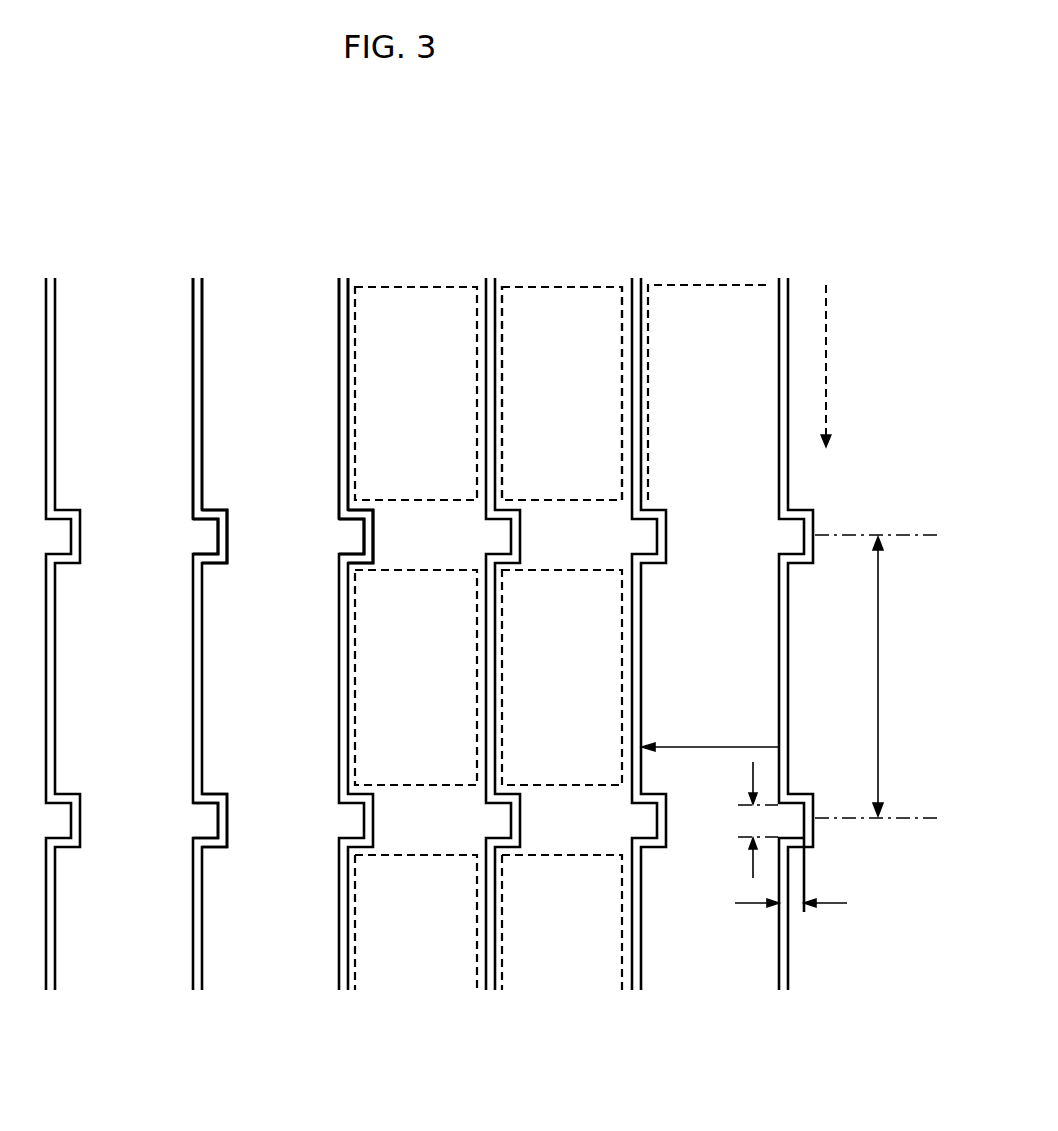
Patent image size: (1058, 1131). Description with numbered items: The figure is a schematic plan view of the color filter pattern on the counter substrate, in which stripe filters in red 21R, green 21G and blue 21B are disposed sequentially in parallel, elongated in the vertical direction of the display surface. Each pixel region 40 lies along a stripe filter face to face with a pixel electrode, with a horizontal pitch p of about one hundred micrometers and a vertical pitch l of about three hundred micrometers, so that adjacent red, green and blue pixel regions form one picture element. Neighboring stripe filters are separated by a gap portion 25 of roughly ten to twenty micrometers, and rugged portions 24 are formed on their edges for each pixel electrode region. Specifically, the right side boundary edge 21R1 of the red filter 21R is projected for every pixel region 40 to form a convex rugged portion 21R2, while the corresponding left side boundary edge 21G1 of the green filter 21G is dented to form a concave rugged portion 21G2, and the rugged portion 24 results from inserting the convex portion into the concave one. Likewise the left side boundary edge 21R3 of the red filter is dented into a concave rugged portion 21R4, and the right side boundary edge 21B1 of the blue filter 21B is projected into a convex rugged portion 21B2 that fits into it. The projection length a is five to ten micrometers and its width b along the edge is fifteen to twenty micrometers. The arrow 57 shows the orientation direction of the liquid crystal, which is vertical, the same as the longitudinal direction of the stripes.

The gap portion 25 is at (198, 280).
The red stripe filter 21R is at (263, 285).
The green stripe filter 21G is at (413, 282).
The blue stripe filter 21B is at (560, 282).
The pixel region 40 is at (588, 295).
The arrow 57 is at (828, 352).
The right side boundary edge 21B1 is at (192, 325).
The left side boundary edge 21R3 is at (203, 333).
The right side boundary edge 21R1 is at (338, 370).
The left side boundary edge 21G1 is at (355, 405).
The concave rugged portion 21R4 is at (228, 520).
The concave rugged portion 21G2 is at (372, 552).
The convex rugged portion 21B2 is at (200, 535).
The convex rugged portion 21R2 is at (345, 535).
The rugged portion 24 is at (176, 514).
The vertical pitch l is at (876, 676).
The horizontal pitch p is at (710, 727).
The width of convex rugged portion b is at (747, 820).
The length of projection a is at (806, 912).